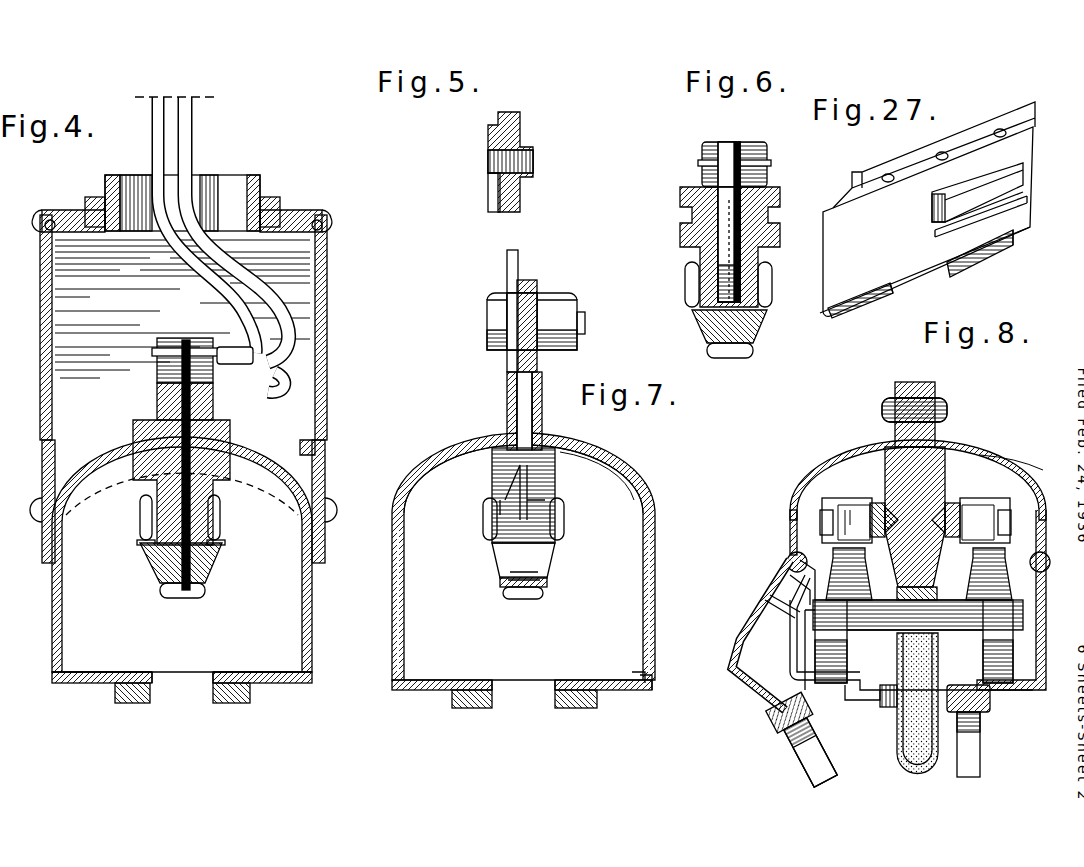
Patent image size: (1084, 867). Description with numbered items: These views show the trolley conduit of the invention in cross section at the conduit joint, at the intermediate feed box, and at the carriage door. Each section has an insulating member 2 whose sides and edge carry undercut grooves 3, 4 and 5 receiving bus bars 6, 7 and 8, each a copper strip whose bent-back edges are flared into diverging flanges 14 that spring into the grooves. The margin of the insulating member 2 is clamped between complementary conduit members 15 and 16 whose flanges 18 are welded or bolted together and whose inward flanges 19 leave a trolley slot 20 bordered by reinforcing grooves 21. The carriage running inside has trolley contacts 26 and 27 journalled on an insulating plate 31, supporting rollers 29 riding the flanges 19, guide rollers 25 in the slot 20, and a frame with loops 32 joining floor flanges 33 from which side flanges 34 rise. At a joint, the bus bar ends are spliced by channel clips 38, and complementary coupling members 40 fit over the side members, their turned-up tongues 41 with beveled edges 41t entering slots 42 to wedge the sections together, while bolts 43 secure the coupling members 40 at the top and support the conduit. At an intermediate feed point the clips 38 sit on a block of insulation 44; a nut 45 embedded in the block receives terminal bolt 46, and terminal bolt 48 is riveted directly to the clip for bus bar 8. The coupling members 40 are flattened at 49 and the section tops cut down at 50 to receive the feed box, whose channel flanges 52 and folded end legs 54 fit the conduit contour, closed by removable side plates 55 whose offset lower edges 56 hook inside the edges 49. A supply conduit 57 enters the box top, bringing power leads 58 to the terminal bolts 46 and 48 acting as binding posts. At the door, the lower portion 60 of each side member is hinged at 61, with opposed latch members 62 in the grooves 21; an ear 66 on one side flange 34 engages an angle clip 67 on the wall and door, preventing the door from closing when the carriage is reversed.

In FIG. 7, the insulating member 2 is at (548, 482).
In FIG. 8, the insulating member 2 is at (893, 445).
In FIG. 7, the undercut groove 3 is at (508, 500).
In FIG. 7, the undercut groove 4 is at (538, 512).
In FIG. 7, the undercut groove 5 is at (525, 572).
In FIG. 4, the bus bar 6 is at (140, 512).
In FIG. 5, the bus bar 6 is at (494, 180).
In FIG. 6, the bus bar 6 is at (688, 285).
In FIG. 7, the bus bar 6 is at (485, 518).
In FIG. 8, the bus bar 6 is at (878, 503).
In FIG. 4, the bus bar 7 is at (222, 515).
In FIG. 6, the bus bar 7 is at (770, 287).
In FIG. 7, the bus bar 7 is at (565, 520).
In FIG. 8, the bus bar 7 is at (952, 503).
In FIG. 4, the bus bar 8 is at (190, 592).
In FIG. 6, the bus bar 8 is at (735, 352).
In FIG. 7, the bus bar 8 is at (528, 599).
In FIG. 8, the bus bar 8 is at (912, 598).
In FIG. 7, the diverging flanges 14 is at (500, 580).
In FIG. 7, the conduit member 15 is at (432, 462).
In FIG. 27, the conduit member 15 is at (985, 180).
In FIG. 8, the conduit member 15 is at (820, 472).
In FIG. 7, the conduit member 16 is at (612, 460).
In FIG. 8, the conduit member 16 is at (1010, 490).
In FIG. 7, the conduit member flanges 18 is at (512, 405).
In FIG. 4, the inwardly directed flanges 19 is at (100, 690).
In FIG. 7, the inwardly directed flanges 19 is at (430, 692).
In FIG. 27, the inwardly directed flanges 19 is at (950, 232).
In FIG. 4, the trolley slot 20 is at (182, 684).
In FIG. 7, the trolley slot 20 is at (523, 688).
In FIG. 4, the reinforcing grooves 21 is at (128, 705).
In FIG. 7, the reinforcing grooves 21 is at (470, 708).
In FIG. 8, the guide rollers 25 is at (890, 708).
In FIG. 8, the trolley contact 26 is at (985, 515).
In FIG. 8, the trolley contact 27 is at (840, 508).
In FIG. 8, the supporting rollers 29 is at (835, 605).
In FIG. 8, the insulating plate 31 is at (950, 618).
In FIG. 8, the loops 32 is at (915, 773).
In FIG. 8, the floor flanges 33 is at (832, 680).
In FIG. 8, the side flanges 34 is at (812, 645).
In FIG. 4, the channel clip 38 is at (205, 588).
In FIG. 5, the channel clip 38 is at (522, 130).
In FIG. 7, the coupling member 40 is at (652, 540).
In FIG. 27, the coupling member 40 is at (842, 220).
In FIG. 7, the tongues 41 is at (655, 683).
In FIG. 27, the tongues 41 is at (863, 303).
In FIG. 27, the beveled side edges 41t is at (888, 282).
In FIG. 7, the slots 42 is at (640, 690).
In FIG. 27, the slots 42 is at (1010, 205).
In FIG. 7, the bolts 43 is at (556, 315).
In FIG. 4, the block of insulation 44 is at (160, 560).
In FIG. 6, the block of insulation 44 is at (760, 328).
In FIG. 6, the nut 45 is at (728, 325).
In FIG. 6, the terminal bolt 46 is at (722, 200).
In FIG. 4, the terminal bolt 48 is at (165, 358).
In FIG. 4, the flattened portions 49 is at (72, 462).
In FIG. 4, the cut-away section tops 50 is at (60, 626).
In FIG. 4, the flanges 52 is at (55, 232).
In FIG. 4, the channel ends 54 is at (132, 437).
In FIG. 4, the side plates 55 is at (327, 345).
In FIG. 4, the offset lower edges 56 is at (305, 440).
In FIG. 4, the supply conduit 57 is at (228, 188).
In FIG. 4, the power leads 58 is at (184, 152).
In FIG. 8, the hinged lower portion 60 is at (747, 632).
In FIG. 8, the hinge 61 is at (790, 555).
In FIG. 8, the latch members 62 is at (775, 752).
In FIG. 8, the ear 66 is at (800, 545).
In FIG. 8, the angle clip 67 is at (793, 575).